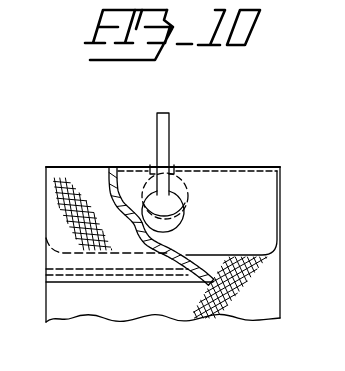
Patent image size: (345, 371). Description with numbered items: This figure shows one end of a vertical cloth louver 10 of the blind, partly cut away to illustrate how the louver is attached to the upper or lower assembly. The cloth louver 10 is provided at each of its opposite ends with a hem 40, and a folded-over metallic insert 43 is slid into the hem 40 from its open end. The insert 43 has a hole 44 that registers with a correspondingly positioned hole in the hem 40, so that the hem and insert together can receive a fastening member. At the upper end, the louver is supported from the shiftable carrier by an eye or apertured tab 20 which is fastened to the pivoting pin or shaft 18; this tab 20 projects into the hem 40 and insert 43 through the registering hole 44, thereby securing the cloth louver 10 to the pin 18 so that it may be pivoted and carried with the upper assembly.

The cloth louver 10 is at (115, 314).
The pivoting pin 18 is at (157, 143).
The apertured tab 20 is at (168, 196).
The hem 40 is at (56, 229).
The folded-over metallic insert 43 is at (265, 208).
The hole 44 is at (184, 215).